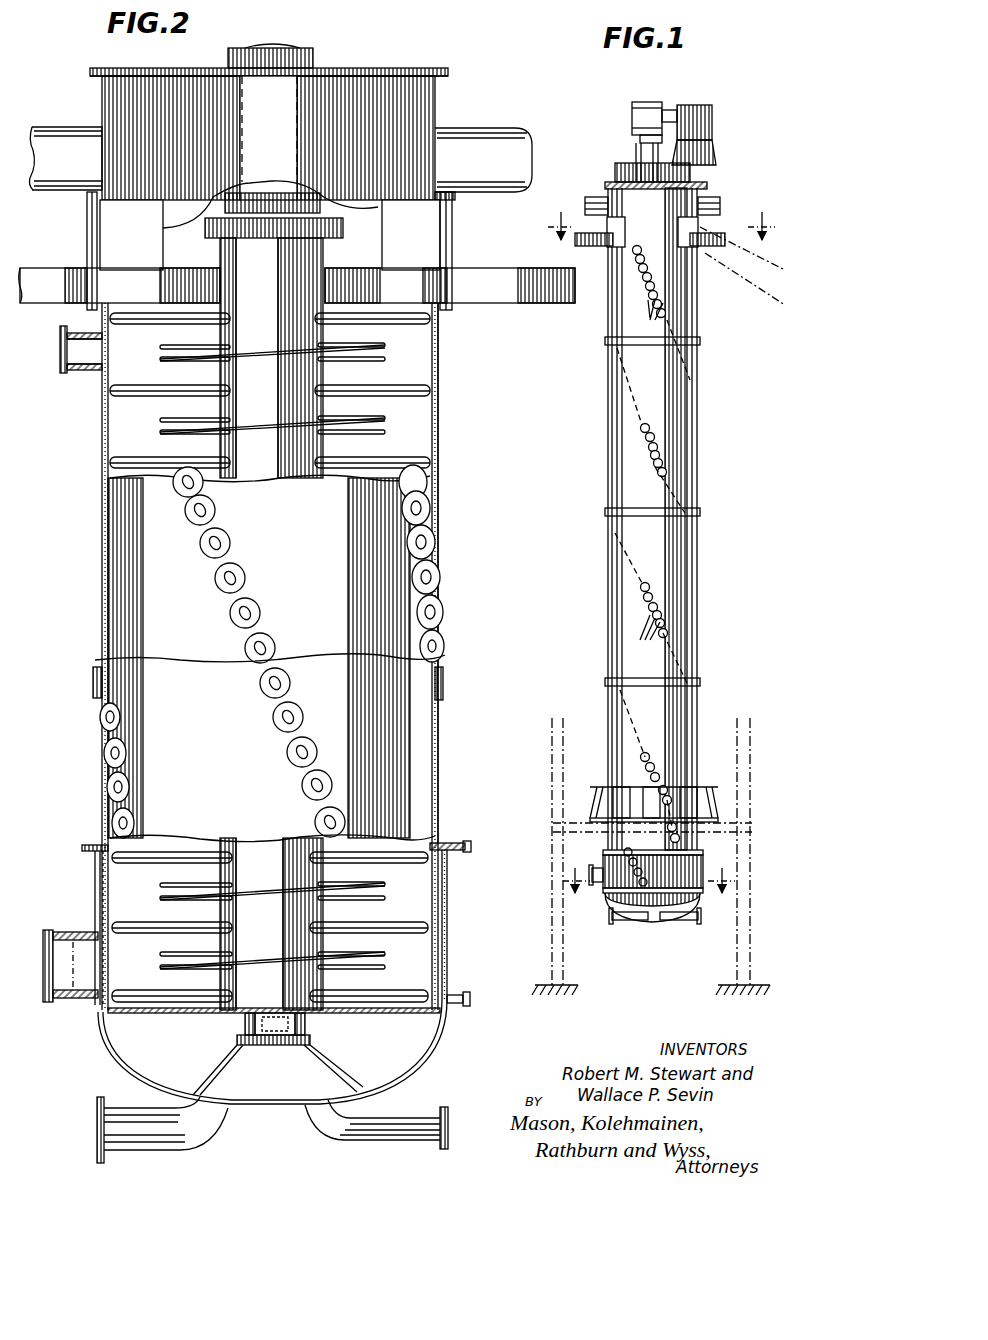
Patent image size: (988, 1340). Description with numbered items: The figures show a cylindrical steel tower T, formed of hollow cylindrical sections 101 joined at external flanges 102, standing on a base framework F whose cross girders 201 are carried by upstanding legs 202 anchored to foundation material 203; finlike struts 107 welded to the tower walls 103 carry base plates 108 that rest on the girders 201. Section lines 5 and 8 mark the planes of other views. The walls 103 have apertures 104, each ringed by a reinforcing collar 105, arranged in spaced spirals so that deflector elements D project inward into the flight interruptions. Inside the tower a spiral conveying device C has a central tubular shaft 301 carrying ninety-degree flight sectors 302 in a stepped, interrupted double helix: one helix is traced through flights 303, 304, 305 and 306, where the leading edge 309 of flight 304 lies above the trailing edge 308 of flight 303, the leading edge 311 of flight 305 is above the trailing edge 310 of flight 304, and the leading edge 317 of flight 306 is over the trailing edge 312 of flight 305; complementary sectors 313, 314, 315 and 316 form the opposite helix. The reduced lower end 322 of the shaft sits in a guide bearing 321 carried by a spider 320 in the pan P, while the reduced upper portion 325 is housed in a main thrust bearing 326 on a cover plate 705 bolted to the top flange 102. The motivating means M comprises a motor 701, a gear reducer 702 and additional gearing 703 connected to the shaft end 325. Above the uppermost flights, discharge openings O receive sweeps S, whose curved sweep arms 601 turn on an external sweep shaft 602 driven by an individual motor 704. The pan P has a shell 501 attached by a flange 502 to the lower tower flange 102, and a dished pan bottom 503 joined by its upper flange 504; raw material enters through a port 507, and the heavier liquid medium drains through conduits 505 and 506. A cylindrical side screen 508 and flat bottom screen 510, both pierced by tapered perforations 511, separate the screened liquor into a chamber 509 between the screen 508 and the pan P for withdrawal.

In FIG. 2, the hollow cylindrical sections 101 is at (437, 530).
In FIG. 1, the hollow cylindrical sections 101 is at (697, 405).
In FIG. 2, the external flanges 102 is at (446, 78).
In FIG. 1, the external flanges 102 is at (715, 520).
In FIG. 2, the tower walls 103 is at (372, 560).
In FIG. 1, the tower walls 103 is at (668, 377).
In FIG. 1, the apertures 104 is at (642, 474).
In FIG. 2, the reinforcing collar or ring member 105 is at (97, 665).
In FIG. 1, the finlike struts 107 is at (698, 790).
In FIG. 1, the base plates 108 is at (716, 818).
In FIG. 1, the cross girders 201 is at (550, 790).
In FIG. 1, the upstanding legs 202 is at (742, 925).
In FIG. 1, the foundation or footing material 203 is at (760, 984).
In FIG. 2, the central tubular shaft 301 is at (271, 358).
In FIG. 2, the flight sectors 302 is at (425, 452).
In FIG. 2, the flight sector 303 is at (183, 1014).
In FIG. 2, the flight sector 304 is at (295, 996).
In FIG. 2, the flight sector 305 is at (375, 930).
In FIG. 2, the flight sector 306 is at (355, 892).
In FIG. 2, the trailing edge of flight 303 308 is at (155, 998).
In FIG. 2, the leading edge of flight 304 309 is at (205, 970).
In FIG. 2, the trailing edge of flight 304 310 is at (318, 948).
In FIG. 2, the leading edge of flight 305 311 is at (340, 955).
In FIG. 2, the trailing edge of flight 305 312 is at (330, 910).
In FIG. 2, the flight sector 313 is at (375, 997).
In FIG. 2, the flight sector 314 is at (368, 970).
In FIG. 2, the flight sector 315 is at (145, 930).
In FIG. 2, the flight sector 316 is at (275, 878).
In FIG. 2, the leading edge of flight 306 317 is at (372, 900).
In FIG. 2, the spider arrangement 320 is at (320, 1068).
In FIG. 2, the guide bearing 321 is at (302, 1040).
In FIG. 2, the reduced lower end portion 322 is at (300, 1023).
In FIG. 2, the reduced upper portion of shaft 325 is at (240, 195).
In FIG. 2, the main thrust bearing 326 is at (313, 62).
In FIG. 1, the main thrust bearing 326 is at (610, 185).
In FIG. 2, the pan shell 501 is at (449, 915).
In FIG. 2, the flange 502 is at (467, 852).
In FIG. 1, the flange 502 is at (596, 875).
In FIG. 2, the pan bottom 503 is at (420, 1080).
In FIG. 1, the pan bottom 503 is at (652, 924).
In FIG. 2, the upper flange 504 is at (462, 1006).
In FIG. 2, the conduit 505 is at (135, 1148).
In FIG. 1, the conduit 505 is at (626, 923).
In FIG. 2, the conduit 506 is at (355, 1140).
In FIG. 1, the conduit 506 is at (672, 923).
In FIG. 2, the conduit or port 507 is at (65, 1000).
In FIG. 2, the cylindrical screen member 508 is at (97, 872).
In FIG. 2, the chamber 509 is at (90, 852).
In FIG. 2, the bottom screen 510 is at (113, 1040).
In FIG. 2, the perforations 511 is at (108, 882).
In FIG. 2, the sweep arms 601 is at (72, 268).
In FIG. 1, the sweep arms 601 is at (580, 240).
In FIG. 2, the sweep shaft 602 is at (86, 214).
In FIG. 1, the motor 701 is at (650, 103).
In FIG. 1, the gear reducer 702 is at (700, 106).
In FIG. 1, the additional gearing 703 is at (618, 165).
In FIG. 2, the sweep driving motor 704 is at (483, 164).
In FIG. 1, the sweep driving motor 704 is at (722, 206).
In FIG. 2, the cover and supporting plate 705 is at (432, 70).
In FIG. 1, the cover and supporting plate 705 is at (700, 190).
In FIG. 1, the section line 5 is at (663, 216).
In FIG. 1, the section line 8 is at (649, 891).
In FIG. 2, the discharge openings O is at (143, 220).
In FIG. 1, the discharge openings O is at (685, 228).
In FIG. 2, the sweeps S is at (80, 308).
In FIG. 1, the sweeps S is at (600, 250).
In FIG. 2, the spiral conveying device C is at (402, 360).
In FIG. 2, the deflector elements D is at (98, 690).
In FIG. 1, the deflector elements D is at (662, 462).
In FIG. 2, the tower T is at (435, 742).
In FIG. 1, the tower T is at (698, 487).
In FIG. 2, the pan P is at (455, 947).
In FIG. 1, the pan P is at (705, 860).
In FIG. 1, the motivating means M is at (718, 128).
In FIG. 1, the base framework F is at (738, 782).